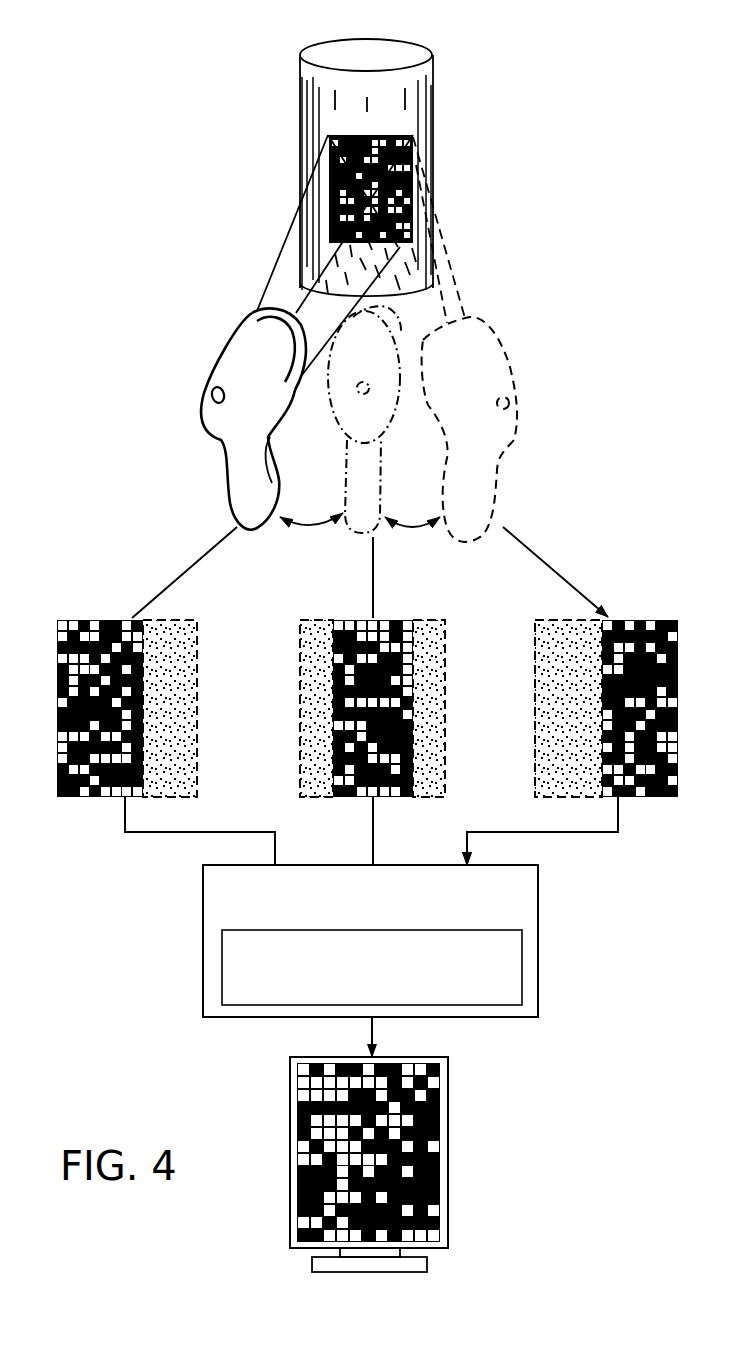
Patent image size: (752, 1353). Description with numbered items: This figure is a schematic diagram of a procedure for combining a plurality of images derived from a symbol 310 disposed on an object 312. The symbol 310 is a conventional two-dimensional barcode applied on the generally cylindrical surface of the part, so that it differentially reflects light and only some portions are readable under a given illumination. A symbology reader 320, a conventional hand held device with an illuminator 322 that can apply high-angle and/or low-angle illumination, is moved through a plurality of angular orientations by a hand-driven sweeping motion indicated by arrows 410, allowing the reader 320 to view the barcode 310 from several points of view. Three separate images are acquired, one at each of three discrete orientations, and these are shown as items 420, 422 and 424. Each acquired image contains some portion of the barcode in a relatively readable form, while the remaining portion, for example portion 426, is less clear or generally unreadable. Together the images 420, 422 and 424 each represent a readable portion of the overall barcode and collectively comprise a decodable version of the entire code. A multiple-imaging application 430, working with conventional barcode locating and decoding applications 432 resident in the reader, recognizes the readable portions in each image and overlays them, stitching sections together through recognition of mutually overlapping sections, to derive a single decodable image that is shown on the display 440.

The symbol 310 is at (380, 138).
The object 312 is at (370, 49).
The symbology reader 320 is at (383, 405).
The illuminator 322 is at (258, 312).
The arrows 410 is at (312, 524).
The acquired image 420 is at (163, 708).
The acquired image 422 is at (450, 733).
The acquired image 424 is at (678, 714).
The less-clear portion 426 is at (188, 682).
The multiple-imaging application 430 is at (417, 941).
The barcode locating and decoding application 432 is at (522, 957).
The display 440 is at (440, 1092).